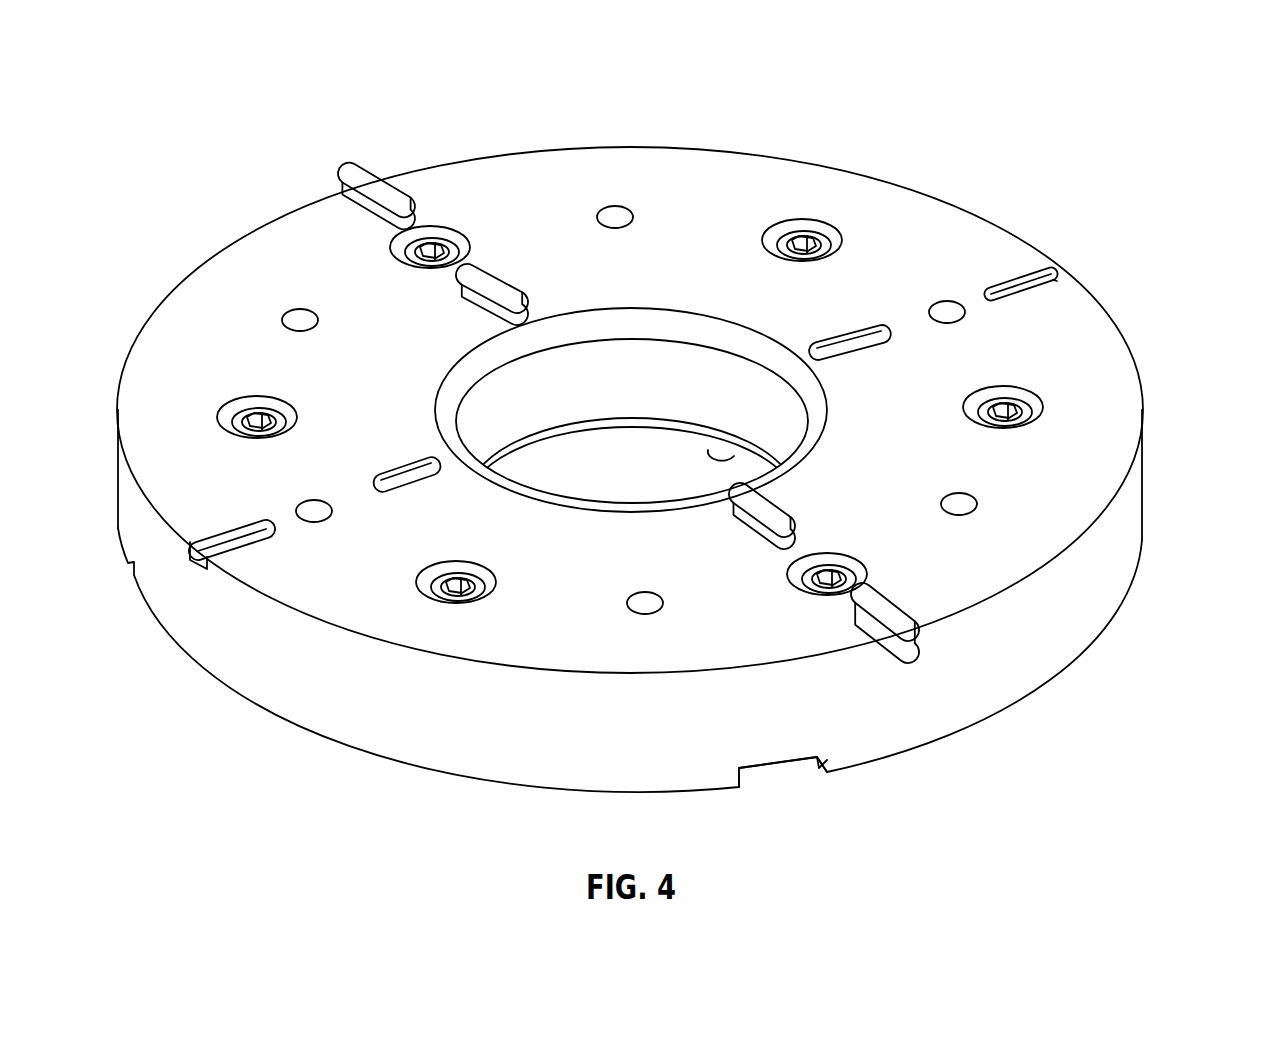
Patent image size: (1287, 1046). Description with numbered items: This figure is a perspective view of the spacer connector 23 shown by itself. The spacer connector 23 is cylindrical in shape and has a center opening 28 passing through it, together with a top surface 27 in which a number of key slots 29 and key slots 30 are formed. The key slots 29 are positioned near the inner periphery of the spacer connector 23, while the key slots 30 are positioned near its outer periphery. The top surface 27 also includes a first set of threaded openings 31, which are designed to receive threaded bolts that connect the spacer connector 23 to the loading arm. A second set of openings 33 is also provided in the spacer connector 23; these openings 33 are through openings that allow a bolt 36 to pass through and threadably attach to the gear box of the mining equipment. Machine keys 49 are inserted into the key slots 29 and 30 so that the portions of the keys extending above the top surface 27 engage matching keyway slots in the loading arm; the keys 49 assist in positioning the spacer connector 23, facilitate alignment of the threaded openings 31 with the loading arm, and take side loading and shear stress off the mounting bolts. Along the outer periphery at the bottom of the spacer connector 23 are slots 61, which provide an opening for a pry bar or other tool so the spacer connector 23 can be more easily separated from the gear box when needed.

The spacer connector 23 is at (1180, 370).
The top surface 27 is at (967, 326).
The center opening 28 is at (683, 370).
The key slots 29 is at (411, 463).
The key slots 30 is at (1020, 282).
The first set of threaded openings 31 is at (633, 217).
The second set of openings 33 is at (630, 526).
The bolt 36 is at (432, 593).
The machine keys 49 is at (396, 190).
The slots 61 is at (783, 790).